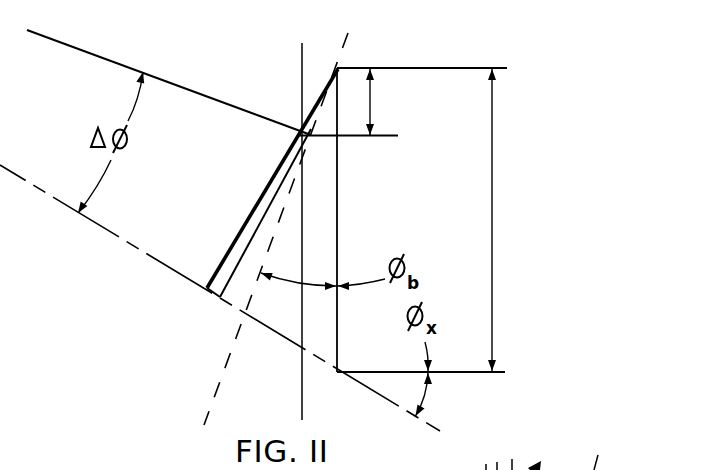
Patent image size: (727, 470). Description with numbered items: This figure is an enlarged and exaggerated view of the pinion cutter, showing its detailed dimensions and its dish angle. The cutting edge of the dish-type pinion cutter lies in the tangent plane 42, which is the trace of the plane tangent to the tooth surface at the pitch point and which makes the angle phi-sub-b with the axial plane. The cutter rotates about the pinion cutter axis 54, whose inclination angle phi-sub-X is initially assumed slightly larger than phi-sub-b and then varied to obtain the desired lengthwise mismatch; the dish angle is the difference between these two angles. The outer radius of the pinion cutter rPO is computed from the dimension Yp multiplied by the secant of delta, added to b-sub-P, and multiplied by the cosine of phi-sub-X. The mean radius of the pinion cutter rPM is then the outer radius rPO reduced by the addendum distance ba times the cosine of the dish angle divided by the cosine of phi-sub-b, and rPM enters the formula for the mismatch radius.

The cutter axis 54 is at (100, 228).
The tangent plane 42 is at (222, 370).
The outer radius of pinion cutter rPO is at (273, 176).
The mean radius of pinion cutter rPM is at (242, 250).
The addendum distance ba is at (374, 102).
The pinion dimension Y-sub-P Yp is at (493, 218).